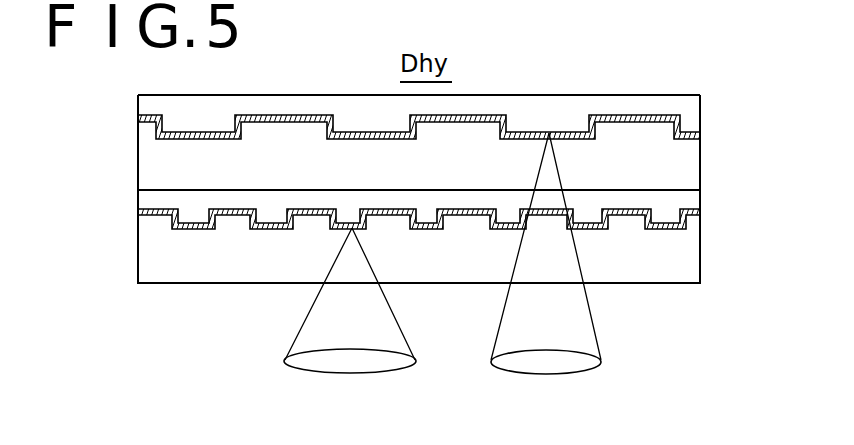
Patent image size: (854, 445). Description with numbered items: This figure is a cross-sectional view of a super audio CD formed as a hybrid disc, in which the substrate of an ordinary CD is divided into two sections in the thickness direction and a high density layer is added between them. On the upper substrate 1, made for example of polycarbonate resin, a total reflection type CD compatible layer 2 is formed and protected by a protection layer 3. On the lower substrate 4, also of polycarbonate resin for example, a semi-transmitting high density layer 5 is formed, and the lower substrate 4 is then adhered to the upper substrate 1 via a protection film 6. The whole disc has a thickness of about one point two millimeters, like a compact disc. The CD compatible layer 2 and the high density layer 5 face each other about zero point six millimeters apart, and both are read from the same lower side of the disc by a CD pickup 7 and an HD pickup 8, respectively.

The upper substrate 1 is at (680, 168).
The CD compatible layer 2 is at (702, 130).
The protection layer 3 is at (150, 110).
The lower substrate 4 is at (680, 250).
The high density layer 5 is at (702, 207).
The protection film 6 is at (152, 200).
The CD pickup 7 is at (530, 376).
The HD pickup 8 is at (335, 375).